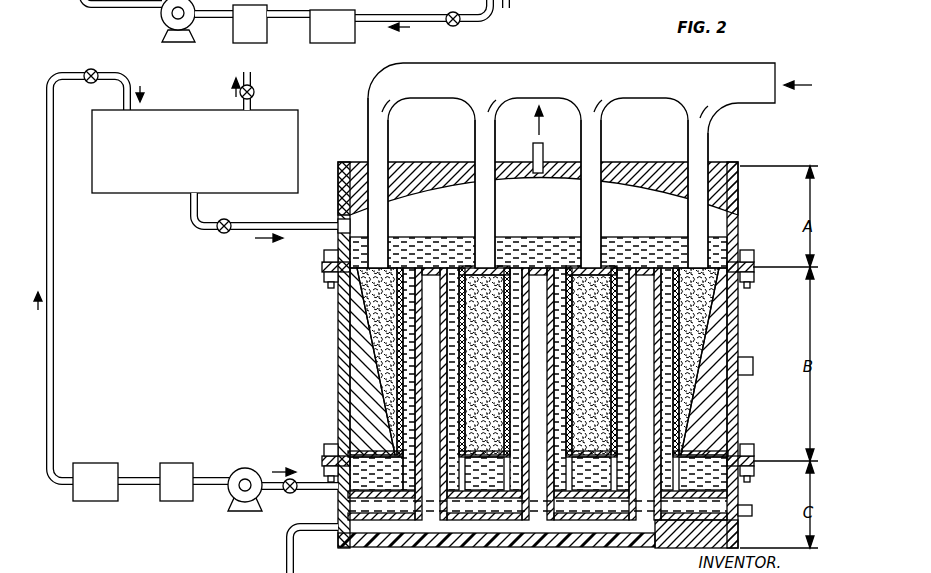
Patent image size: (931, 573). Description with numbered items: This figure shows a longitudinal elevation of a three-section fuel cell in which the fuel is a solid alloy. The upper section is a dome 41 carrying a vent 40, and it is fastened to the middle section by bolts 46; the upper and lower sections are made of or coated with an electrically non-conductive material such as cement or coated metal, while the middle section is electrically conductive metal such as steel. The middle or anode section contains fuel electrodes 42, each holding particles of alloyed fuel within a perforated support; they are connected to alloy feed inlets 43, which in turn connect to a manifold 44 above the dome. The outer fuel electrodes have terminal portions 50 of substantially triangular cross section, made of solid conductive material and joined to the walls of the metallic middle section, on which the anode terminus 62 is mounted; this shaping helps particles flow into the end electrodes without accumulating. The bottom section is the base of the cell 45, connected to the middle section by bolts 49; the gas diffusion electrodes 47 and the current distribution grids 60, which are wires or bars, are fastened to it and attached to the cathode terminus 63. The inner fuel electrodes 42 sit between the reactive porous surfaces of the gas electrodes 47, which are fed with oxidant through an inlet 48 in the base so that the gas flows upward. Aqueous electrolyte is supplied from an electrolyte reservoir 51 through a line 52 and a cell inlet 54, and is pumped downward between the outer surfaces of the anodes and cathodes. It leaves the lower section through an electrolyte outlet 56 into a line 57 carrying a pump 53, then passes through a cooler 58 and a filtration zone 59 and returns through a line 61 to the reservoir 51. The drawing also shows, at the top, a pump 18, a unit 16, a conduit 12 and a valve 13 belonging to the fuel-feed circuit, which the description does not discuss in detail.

The conduit 12 is at (296, 20).
The valve 13 is at (447, 13).
The heat exchanger 16 is at (235, 30).
The pump 18 is at (163, 20).
The vent 40 is at (543, 148).
The upper section or dome 41 is at (727, 165).
The fuel electrodes 42 is at (442, 266).
The alloy feed inlet 43 is at (480, 205).
The manifold 44 is at (590, 70).
The base of the cell 45 is at (409, 540).
The bolts 46 is at (330, 275).
The gas diffusion electrodes 47 is at (537, 262).
The inlet 48 is at (483, 540).
The bolts 49 is at (328, 452).
The terminal portions 50 is at (378, 340).
The electrolyte reservoir 51 is at (300, 130).
The line 52 is at (200, 230).
The pump 53 is at (236, 508).
The cell inlet 54 is at (343, 216).
The electrolyte outlet 56 is at (340, 490).
The line 57 is at (140, 478).
The cooler 58 is at (173, 500).
The filtration zone 59 is at (90, 500).
The current distribution grids 60 is at (410, 494).
The line 61 is at (55, 357).
The anode terminus 62 is at (750, 357).
The cathode terminus 63 is at (752, 513).